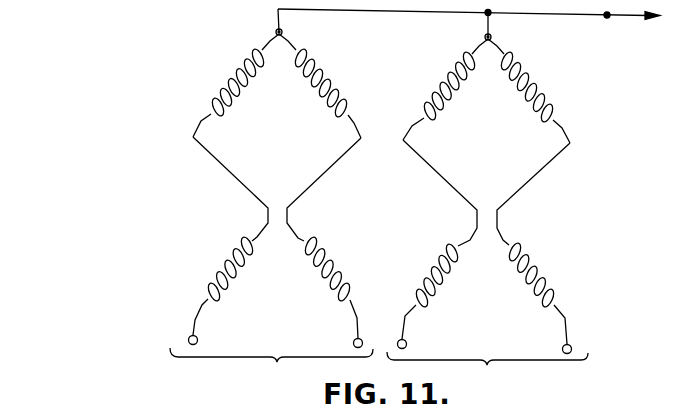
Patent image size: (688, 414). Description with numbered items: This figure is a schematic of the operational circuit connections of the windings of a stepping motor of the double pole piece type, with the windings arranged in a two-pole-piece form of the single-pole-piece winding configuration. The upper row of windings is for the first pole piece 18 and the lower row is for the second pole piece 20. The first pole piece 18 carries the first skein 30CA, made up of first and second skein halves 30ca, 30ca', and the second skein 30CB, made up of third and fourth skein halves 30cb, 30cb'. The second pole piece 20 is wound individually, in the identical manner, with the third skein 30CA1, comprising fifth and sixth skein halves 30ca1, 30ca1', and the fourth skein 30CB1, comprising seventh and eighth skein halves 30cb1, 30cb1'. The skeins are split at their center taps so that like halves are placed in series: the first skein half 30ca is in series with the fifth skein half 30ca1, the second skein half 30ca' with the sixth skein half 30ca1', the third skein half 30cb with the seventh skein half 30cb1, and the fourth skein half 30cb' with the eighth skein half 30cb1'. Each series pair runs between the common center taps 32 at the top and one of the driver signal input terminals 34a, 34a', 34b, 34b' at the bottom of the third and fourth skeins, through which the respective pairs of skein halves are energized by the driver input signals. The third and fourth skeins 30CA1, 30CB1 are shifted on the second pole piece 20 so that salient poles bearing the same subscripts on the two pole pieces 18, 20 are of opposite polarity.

The first pole piece 18 is at (117, 80).
The second pole piece 20 is at (127, 253).
The common center taps 32 is at (608, 18).
The first skein 30CA is at (302, 112).
The first skein half 30ca is at (222, 88).
The second skein half 30ca' is at (336, 89).
The third skein 30CA1 is at (302, 298).
The fifth skein half 30ca1 is at (209, 276).
The sixth skein half 30ca1' is at (336, 277).
The second skein 30CB is at (510, 116).
The third skein half 30cb is at (440, 92).
The fourth skein half 30cb' is at (541, 93).
The fourth skein 30CB1 is at (513, 303).
The seventh skein half 30cb1 is at (426, 280).
The eighth skein half 30cb1' is at (544, 283).
The first driver input terminal 34a is at (165, 334).
The second driver input terminal 34a' is at (330, 335).
The third driver input terminal 34b is at (430, 338).
The fourth driver input terminal 34b' is at (600, 342).